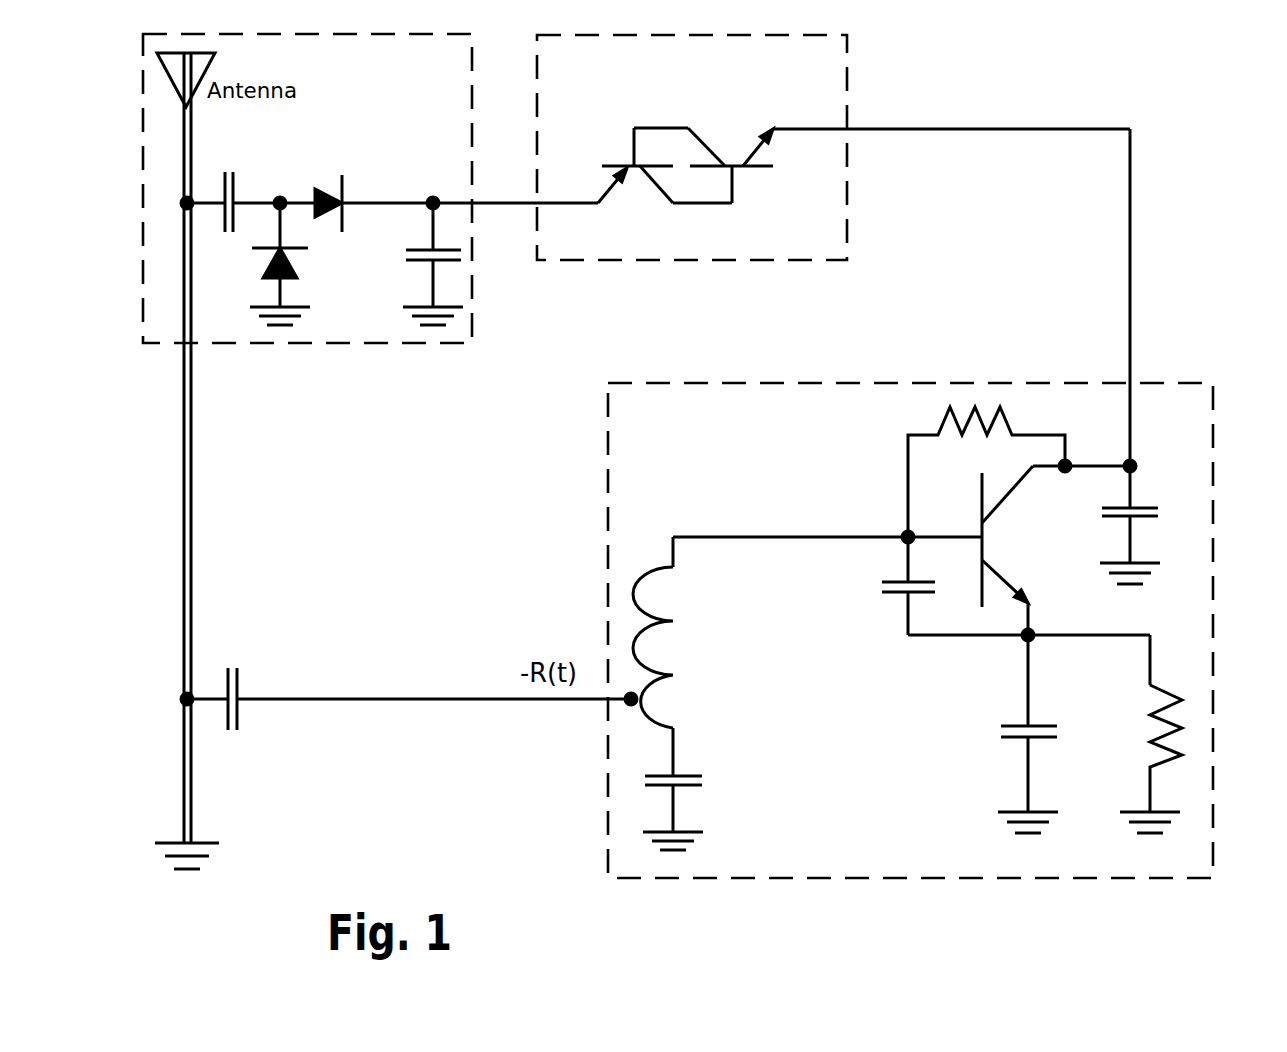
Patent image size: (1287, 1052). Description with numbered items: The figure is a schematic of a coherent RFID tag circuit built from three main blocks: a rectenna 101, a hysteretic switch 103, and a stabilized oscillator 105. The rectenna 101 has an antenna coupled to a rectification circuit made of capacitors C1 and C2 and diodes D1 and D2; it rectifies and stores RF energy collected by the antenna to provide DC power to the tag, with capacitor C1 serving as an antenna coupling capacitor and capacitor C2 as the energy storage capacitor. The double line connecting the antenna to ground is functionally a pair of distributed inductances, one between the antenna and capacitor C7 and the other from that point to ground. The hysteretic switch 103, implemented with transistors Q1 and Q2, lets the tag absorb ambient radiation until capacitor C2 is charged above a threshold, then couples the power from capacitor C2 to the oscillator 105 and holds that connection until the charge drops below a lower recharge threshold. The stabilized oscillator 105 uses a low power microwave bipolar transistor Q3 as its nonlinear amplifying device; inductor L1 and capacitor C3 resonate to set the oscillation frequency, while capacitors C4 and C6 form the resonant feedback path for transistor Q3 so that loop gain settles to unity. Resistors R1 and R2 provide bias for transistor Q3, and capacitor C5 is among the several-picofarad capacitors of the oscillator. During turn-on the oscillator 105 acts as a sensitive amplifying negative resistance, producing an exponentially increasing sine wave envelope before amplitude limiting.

The rectenna 101 is at (407, 107).
The hysteretic switch 103 is at (716, 99).
The stabilized oscillator 105 is at (719, 458).
The capacitor C1 is at (249, 197).
The diode D1 is at (348, 197).
The diode D2 is at (267, 264).
The capacitor C2 is at (423, 264).
The transistor Q1 is at (665, 190).
The transistor Q2 is at (703, 146).
The resistor R1 is at (986, 472).
The low power microwave bipolar transistor Q3 is at (970, 550).
The capacitor C4 is at (890, 586).
The capacitor C5 is at (1147, 525).
The inductor L1 is at (672, 647).
The capacitor C3 is at (697, 789).
The capacitor C6 is at (1010, 734).
The resistor R2 is at (1142, 759).
The capacitor C7 is at (411, 722).